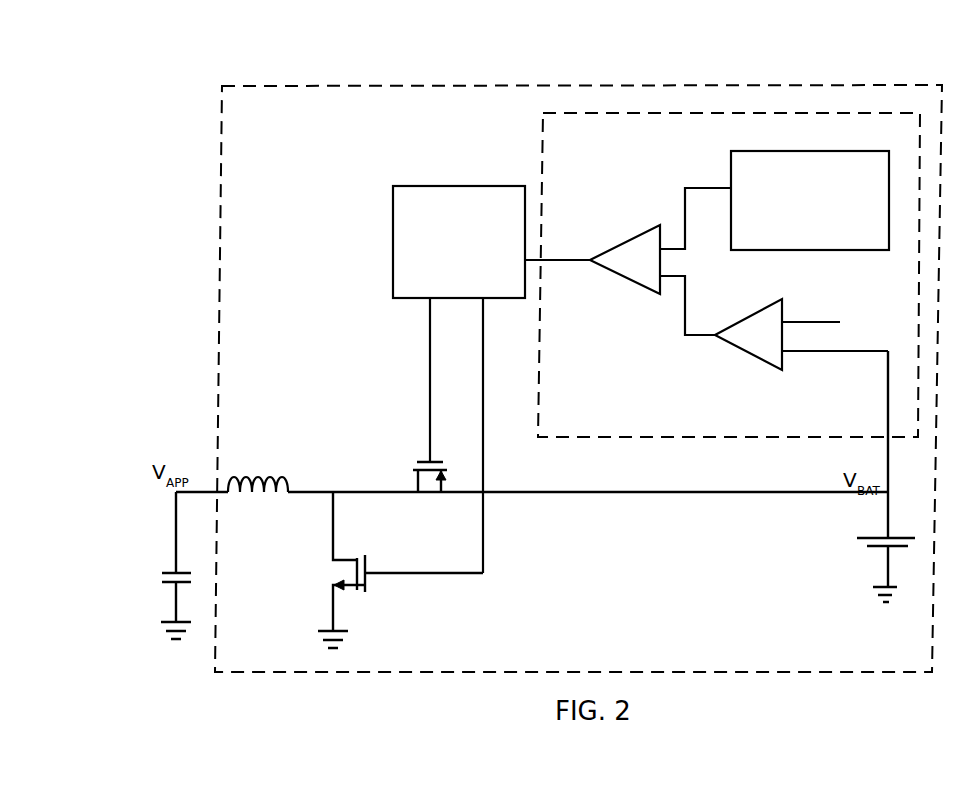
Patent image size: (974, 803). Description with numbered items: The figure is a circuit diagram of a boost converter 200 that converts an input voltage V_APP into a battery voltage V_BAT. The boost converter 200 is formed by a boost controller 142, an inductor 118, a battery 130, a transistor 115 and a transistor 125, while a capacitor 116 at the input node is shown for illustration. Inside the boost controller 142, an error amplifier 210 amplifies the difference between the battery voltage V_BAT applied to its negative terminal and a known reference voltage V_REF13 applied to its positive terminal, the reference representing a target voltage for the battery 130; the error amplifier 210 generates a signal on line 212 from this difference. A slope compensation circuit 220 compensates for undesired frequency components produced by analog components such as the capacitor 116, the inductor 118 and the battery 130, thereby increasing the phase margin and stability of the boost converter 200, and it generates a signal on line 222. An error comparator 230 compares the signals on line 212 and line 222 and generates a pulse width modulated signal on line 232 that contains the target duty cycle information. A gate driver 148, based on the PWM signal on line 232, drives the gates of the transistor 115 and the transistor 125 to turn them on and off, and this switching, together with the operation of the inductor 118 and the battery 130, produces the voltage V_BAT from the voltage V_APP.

The boost converter 200 is at (297, 85).
The boost controller 142 is at (543, 150).
The gate driver 148 is at (459, 242).
The slope compensation circuit 220 is at (810, 200).
The line 222 is at (713, 187).
The error comparator 230 is at (627, 280).
The line 232 is at (550, 260).
The error amplifier 210 is at (747, 356).
The line 212 is at (686, 319).
The inductor 118 is at (258, 467).
The capacitor 116 is at (155, 565).
The transistor 125 is at (431, 497).
The transistor 115 is at (384, 570).
The battery 130 is at (890, 476).